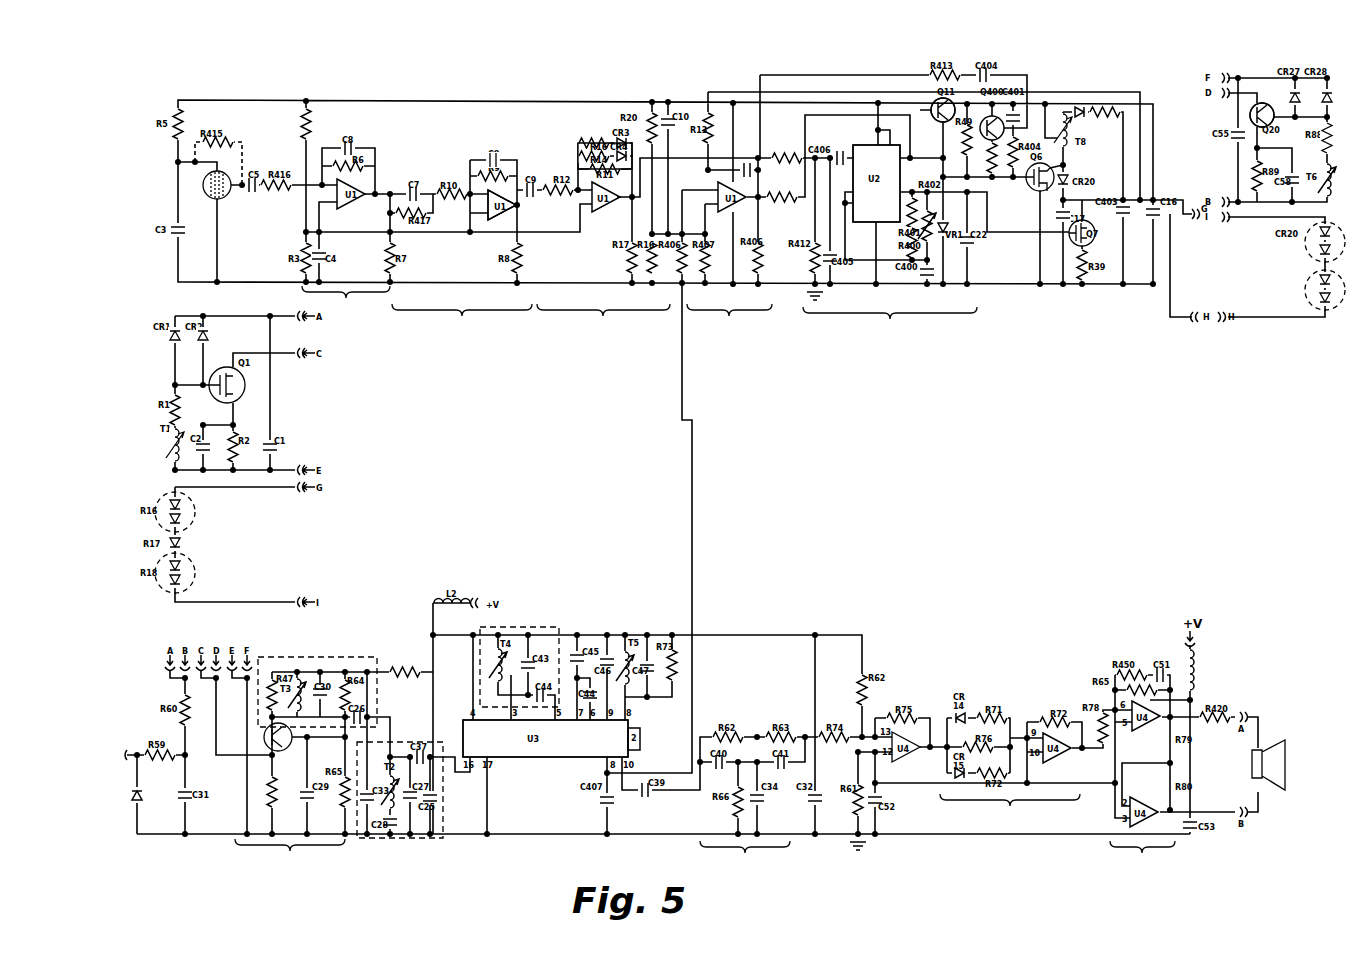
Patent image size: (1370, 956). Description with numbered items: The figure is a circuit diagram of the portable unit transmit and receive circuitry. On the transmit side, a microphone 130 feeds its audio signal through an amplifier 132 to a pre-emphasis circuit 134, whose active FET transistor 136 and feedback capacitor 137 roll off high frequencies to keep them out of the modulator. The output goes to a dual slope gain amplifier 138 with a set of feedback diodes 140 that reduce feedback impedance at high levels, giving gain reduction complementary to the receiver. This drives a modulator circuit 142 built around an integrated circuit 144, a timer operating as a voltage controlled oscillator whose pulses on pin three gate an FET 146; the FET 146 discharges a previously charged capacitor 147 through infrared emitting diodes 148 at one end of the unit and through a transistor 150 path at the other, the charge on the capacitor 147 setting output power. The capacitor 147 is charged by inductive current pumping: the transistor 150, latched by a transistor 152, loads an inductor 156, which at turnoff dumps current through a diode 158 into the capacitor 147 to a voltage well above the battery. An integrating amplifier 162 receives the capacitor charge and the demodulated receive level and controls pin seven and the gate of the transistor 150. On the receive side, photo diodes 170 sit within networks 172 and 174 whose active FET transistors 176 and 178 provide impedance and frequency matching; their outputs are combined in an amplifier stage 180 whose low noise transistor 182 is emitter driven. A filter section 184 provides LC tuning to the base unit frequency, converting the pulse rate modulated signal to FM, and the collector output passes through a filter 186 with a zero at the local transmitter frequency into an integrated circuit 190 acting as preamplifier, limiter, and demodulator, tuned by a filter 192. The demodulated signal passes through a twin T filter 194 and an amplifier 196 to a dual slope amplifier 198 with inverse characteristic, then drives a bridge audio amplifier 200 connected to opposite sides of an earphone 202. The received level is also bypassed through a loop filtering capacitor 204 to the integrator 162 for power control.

The microphone 130 is at (222, 195).
The amplifier 132 is at (346, 301).
The pre-emphasis circuit 134 is at (462, 319).
The active FET transistor 136 is at (500, 214).
The feedback capacitor 137 is at (490, 158).
The dual slope gain amplifier 138 is at (603, 319).
The feedback diodes 140 is at (573, 141).
The modulator circuit 142 is at (890, 323).
The integrated circuit 144 is at (888, 201).
The FET 146 is at (1088, 237).
The capacitor 147 is at (1060, 220).
The infrared emitting diodes 148 is at (189, 546).
The transistor 150 is at (1033, 194).
The transistor 152 is at (955, 127).
The inductor 156 is at (1072, 135).
The diode 158 is at (1069, 178).
The integrating amplifier 162 is at (729, 320).
The photo diodes 170 is at (215, 322).
The network 172 is at (168, 447).
The network 174 is at (1316, 119).
The active FET transistor 176 is at (235, 400).
The active FET transistor 178 is at (1250, 114).
The amplifier stage 180 is at (290, 856).
The low noise transistor 182 is at (282, 750).
The filter section 184 is at (333, 657).
The filter 186 is at (398, 742).
The integrated circuit 190 is at (592, 745).
The filter 192 is at (546, 610).
The twin T filter 194 is at (745, 860).
The amplifier 196 is at (912, 763).
The dual slope amplifier 198 is at (1010, 811).
The bridge audio amplifier 200 is at (1142, 856).
The earphone 202 is at (1248, 758).
The capacitor 204 is at (615, 802).